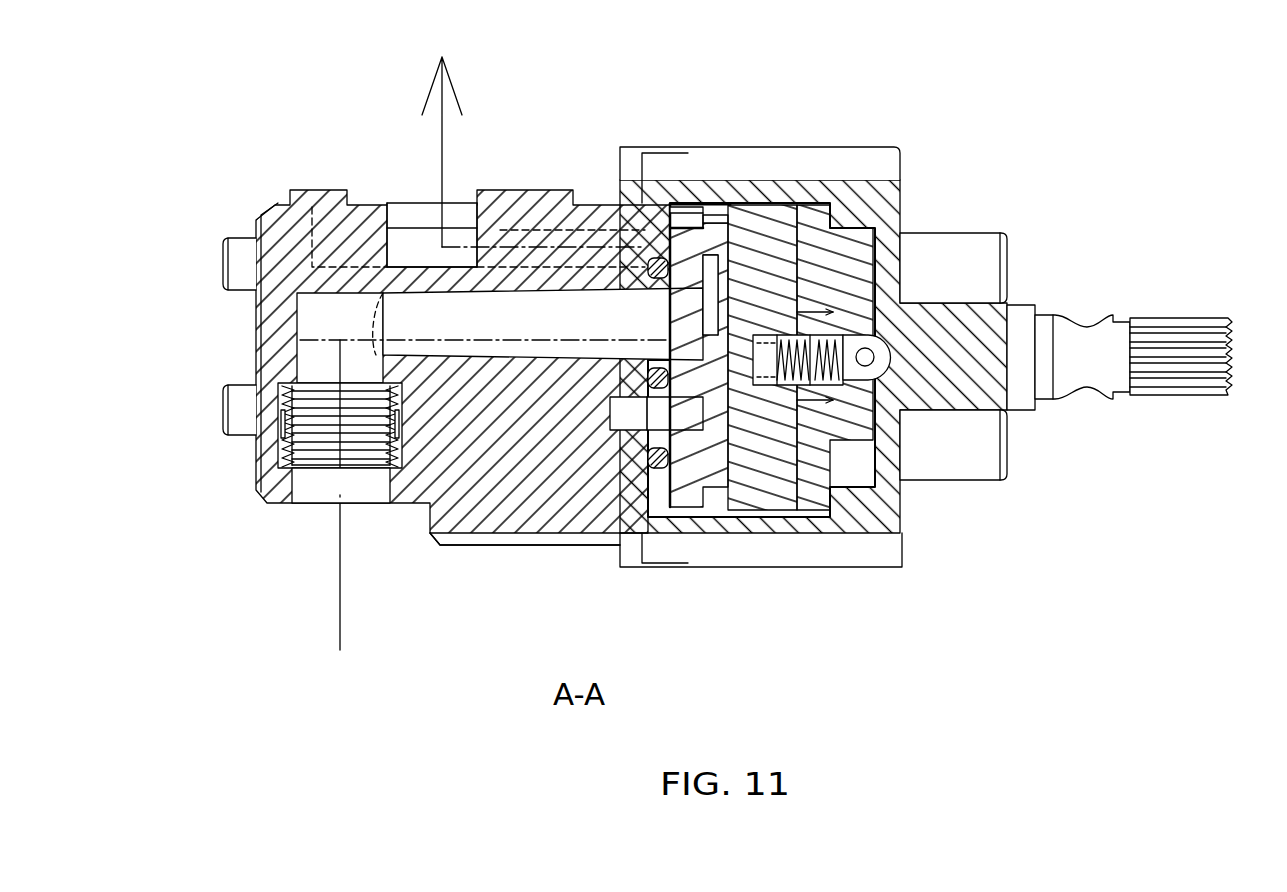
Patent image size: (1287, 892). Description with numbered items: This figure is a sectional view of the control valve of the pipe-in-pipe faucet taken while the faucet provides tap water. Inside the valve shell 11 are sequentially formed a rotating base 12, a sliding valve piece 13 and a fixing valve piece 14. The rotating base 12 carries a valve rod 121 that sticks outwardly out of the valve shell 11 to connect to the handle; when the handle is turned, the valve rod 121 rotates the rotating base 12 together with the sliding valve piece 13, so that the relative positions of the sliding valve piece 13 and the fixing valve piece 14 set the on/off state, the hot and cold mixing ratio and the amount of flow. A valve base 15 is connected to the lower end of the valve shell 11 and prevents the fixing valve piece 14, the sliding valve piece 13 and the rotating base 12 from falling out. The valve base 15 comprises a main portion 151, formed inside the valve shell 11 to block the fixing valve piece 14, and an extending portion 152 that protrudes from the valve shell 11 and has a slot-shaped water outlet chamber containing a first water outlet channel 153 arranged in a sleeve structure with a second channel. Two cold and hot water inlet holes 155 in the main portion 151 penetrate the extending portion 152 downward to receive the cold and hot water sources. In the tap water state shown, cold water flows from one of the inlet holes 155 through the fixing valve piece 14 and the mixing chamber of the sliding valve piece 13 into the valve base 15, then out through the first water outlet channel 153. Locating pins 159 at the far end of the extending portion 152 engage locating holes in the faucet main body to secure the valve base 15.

The valve shell 11 is at (865, 160).
The rotating base 12 is at (903, 427).
The sliding valve piece 13 is at (757, 492).
The fixing valve piece 14 is at (670, 500).
The valve base 15 is at (258, 210).
The valve rod 121 is at (1190, 325).
The main portion 151 is at (653, 212).
The extending portion 152 is at (450, 548).
The first water outlet channel 153 is at (420, 237).
The cold and hot water inlet holes 155 is at (262, 480).
The locating pins 159 is at (238, 263).